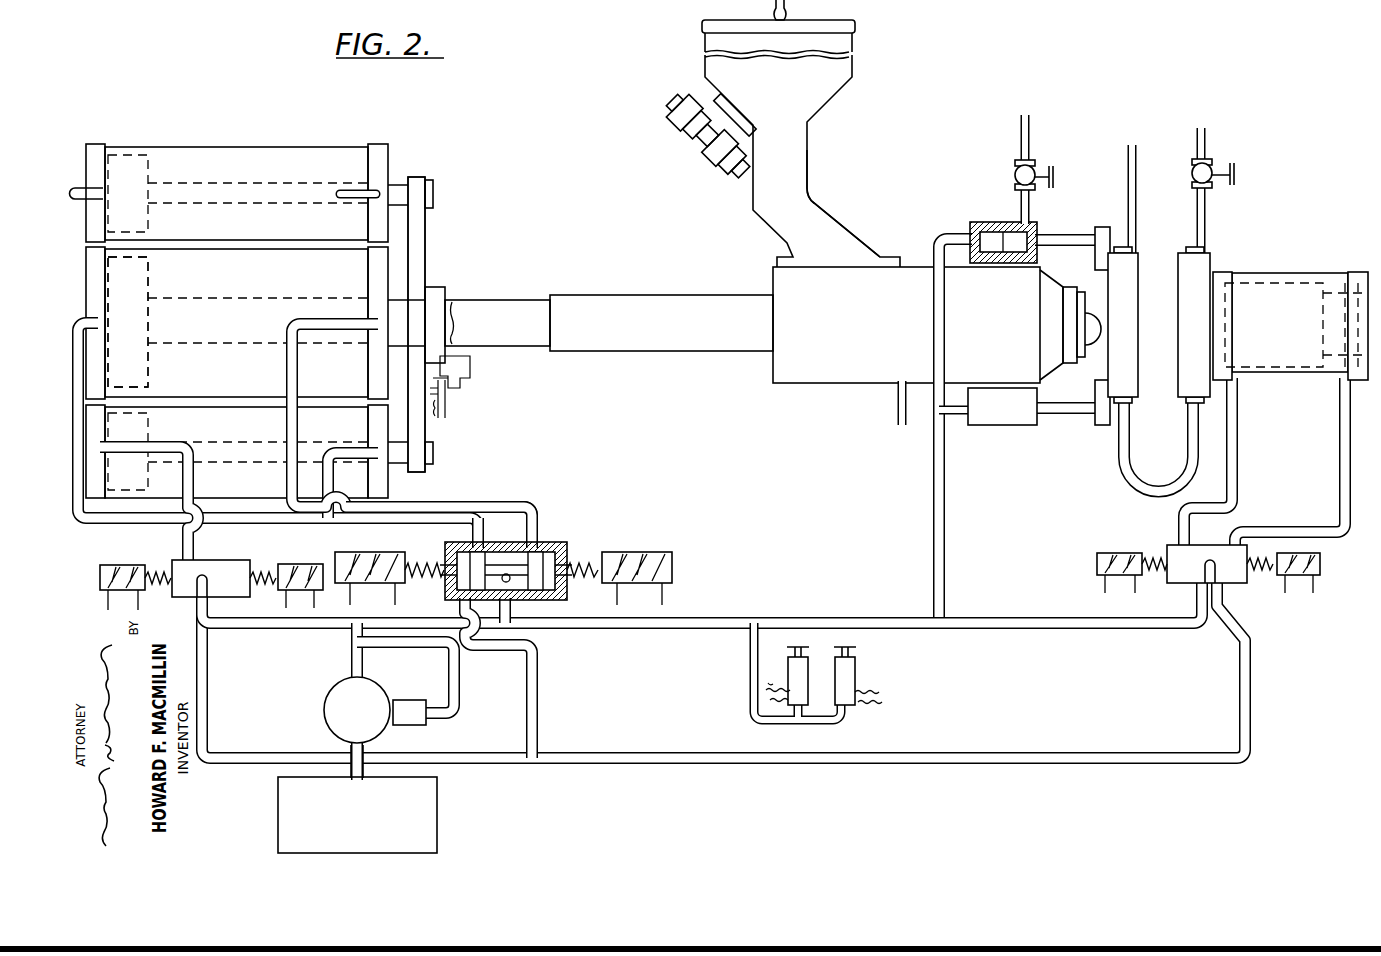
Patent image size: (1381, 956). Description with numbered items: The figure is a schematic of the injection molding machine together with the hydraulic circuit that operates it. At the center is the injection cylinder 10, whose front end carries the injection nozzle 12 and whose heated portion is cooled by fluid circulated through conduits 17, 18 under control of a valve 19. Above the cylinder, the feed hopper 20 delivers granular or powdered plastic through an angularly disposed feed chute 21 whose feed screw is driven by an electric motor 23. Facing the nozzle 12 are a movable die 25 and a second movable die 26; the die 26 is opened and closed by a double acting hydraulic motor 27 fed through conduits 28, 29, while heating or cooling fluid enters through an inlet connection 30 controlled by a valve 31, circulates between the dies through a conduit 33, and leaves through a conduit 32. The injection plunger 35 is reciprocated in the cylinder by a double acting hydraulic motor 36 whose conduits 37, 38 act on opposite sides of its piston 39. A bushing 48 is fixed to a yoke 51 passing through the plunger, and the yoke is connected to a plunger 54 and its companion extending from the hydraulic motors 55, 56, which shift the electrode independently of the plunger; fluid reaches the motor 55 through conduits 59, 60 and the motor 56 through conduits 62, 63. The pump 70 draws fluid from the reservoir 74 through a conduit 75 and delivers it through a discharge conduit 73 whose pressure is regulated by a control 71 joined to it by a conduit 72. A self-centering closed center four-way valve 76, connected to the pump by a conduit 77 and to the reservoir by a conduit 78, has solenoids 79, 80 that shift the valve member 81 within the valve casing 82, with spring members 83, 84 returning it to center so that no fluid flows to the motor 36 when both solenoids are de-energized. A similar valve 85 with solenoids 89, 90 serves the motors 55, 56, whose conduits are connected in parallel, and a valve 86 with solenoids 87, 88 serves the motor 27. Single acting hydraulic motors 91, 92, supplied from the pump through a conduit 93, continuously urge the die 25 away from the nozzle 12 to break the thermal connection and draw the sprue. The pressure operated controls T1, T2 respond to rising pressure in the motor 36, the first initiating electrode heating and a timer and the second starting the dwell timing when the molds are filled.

The injection cylinder 10 is at (917, 270).
The injection nozzle 12 is at (1084, 300).
The fluid conducting conduit 17 is at (1031, 152).
The fluid conducting conduit 18 is at (897, 416).
The valve 19 is at (1046, 172).
The feed hopper 20 is at (853, 76).
The feed chute 21 is at (819, 204).
The electric motor 23 is at (688, 162).
The movable die 25 is at (1131, 303).
The movable die 26 is at (1203, 293).
The hydraulic motor 27 is at (1293, 326).
The fluid conducting conduit 28 is at (1237, 440).
The fluid conducting conduit 29 is at (1340, 440).
The fluid inlet connection 30 is at (1206, 234).
The valve 31 is at (1191, 173).
The conduit 32 is at (1128, 177).
The conduit 33 is at (1160, 493).
The injection plunger 35 is at (630, 292).
The hydraulic motor 36 is at (221, 280).
The fluid conducting conduit 37 is at (95, 320).
The fluid conducting conduit 38 is at (294, 370).
The piston 39 is at (150, 323).
The bushing 48 is at (446, 290).
The yoke 51 is at (424, 240).
The plunger 54 is at (397, 183).
The hydraulic motor 55 is at (231, 436).
The hydraulic motor 56 is at (277, 154).
The fluid conducting means 59 is at (124, 449).
The fluid conducting means 60 is at (336, 478).
The fluid conducting means 62 is at (76, 190).
The fluid conducting means 63 is at (360, 190).
The pump 70 is at (324, 712).
The control 71 is at (415, 705).
The conduit 72 is at (444, 708).
The discharge conduit 73 is at (352, 664).
The reservoir 74 is at (386, 816).
The conduit 75 is at (350, 775).
The four-way valve 76 is at (567, 560).
The conduit 77 is at (262, 628).
The conduit 78 is at (536, 730).
The solenoid 79 is at (354, 583).
The solenoid 80 is at (672, 576).
The valve member 81 is at (482, 556).
The valve casing 82 is at (548, 540).
The spring member 83 is at (424, 583).
The spring member 84 is at (582, 585).
The four-way valve 85 is at (176, 560).
The four-way valve 86 is at (1186, 584).
The solenoid 87 is at (1120, 552).
The solenoid 88 is at (1283, 585).
The solenoid 89 is at (116, 564).
The solenoid 90 is at (298, 578).
The single acting hydraulic motor 91 is at (1012, 426).
The single acting hydraulic motor 92 is at (1004, 222).
The conduit 93 is at (945, 538).
The pressure operated control T1 is at (806, 662).
The pressure operated control T2 is at (850, 672).